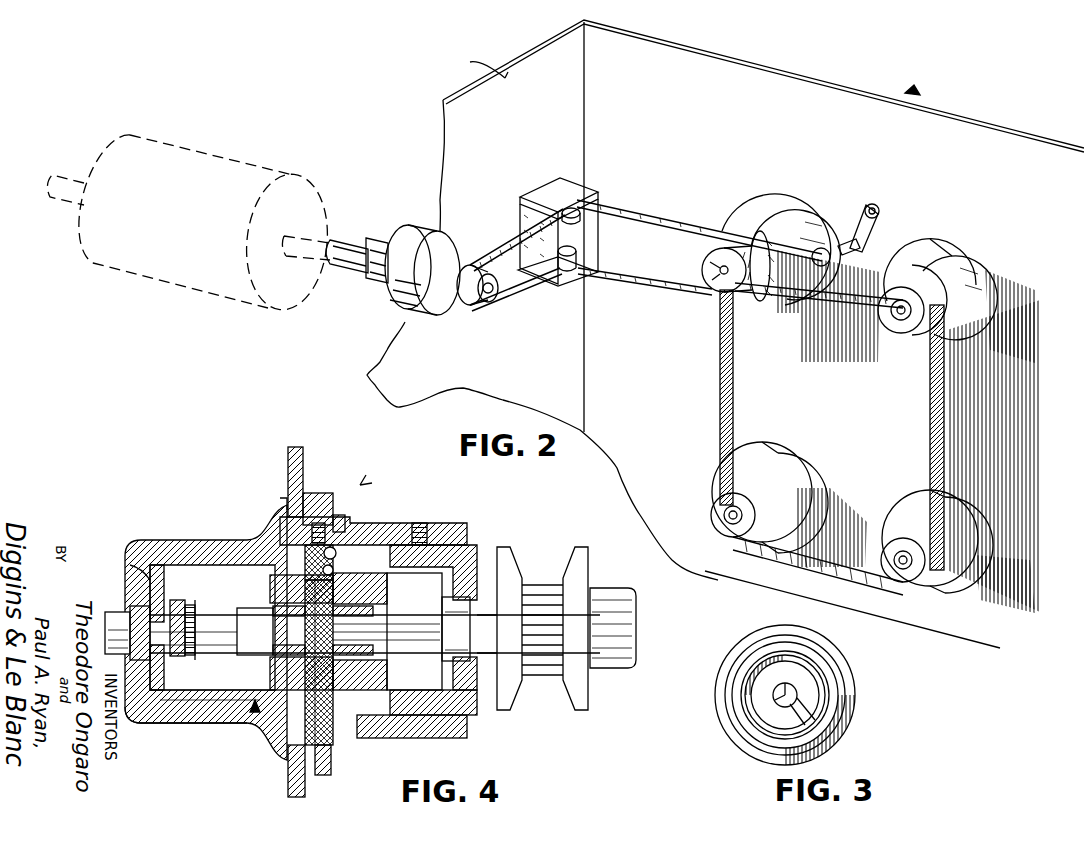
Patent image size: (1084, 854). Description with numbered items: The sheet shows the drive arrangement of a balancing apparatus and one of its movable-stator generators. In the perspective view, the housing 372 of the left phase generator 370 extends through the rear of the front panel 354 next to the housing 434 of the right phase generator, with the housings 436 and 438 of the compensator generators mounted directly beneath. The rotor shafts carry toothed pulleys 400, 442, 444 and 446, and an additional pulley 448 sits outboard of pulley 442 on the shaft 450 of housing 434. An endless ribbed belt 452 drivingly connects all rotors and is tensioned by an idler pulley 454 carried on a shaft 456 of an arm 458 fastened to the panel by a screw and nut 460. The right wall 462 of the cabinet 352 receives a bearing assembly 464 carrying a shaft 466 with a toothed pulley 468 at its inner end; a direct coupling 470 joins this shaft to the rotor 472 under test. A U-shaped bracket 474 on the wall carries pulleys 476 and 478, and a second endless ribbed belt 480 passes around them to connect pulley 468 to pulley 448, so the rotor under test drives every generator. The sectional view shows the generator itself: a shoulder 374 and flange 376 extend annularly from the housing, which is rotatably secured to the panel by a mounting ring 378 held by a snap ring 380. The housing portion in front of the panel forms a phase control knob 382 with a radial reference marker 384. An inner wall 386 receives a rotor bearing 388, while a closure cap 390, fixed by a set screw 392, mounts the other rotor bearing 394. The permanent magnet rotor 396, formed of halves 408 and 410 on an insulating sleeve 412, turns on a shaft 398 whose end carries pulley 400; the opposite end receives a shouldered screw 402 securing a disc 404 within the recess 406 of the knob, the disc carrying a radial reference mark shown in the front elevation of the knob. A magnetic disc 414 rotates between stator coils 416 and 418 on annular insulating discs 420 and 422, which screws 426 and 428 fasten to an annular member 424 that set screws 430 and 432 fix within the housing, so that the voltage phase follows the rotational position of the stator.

In FIG. 2, the housing or cabinet 352 is at (912, 88).
In FIG. 2, the front panel 354 is at (688, 107).
In FIG. 4, the front panel 354 is at (290, 455).
In FIG. 4, the left phase generator 370 is at (360, 485).
In FIG. 2, the housing 372 is at (960, 252).
In FIG. 4, the housing 372 is at (410, 520).
In FIG. 4, the shoulder 374 is at (308, 493).
In FIG. 3, the flange 376 is at (852, 710).
In FIG. 4, the flange 376 is at (282, 500).
In FIG. 4, the mounting ring 378 is at (345, 506).
In FIG. 4, the snap ring 380 is at (328, 520).
In FIG. 3, the phase control knob 382 is at (822, 667).
In FIG. 4, the phase control knob 382 is at (186, 538).
In FIG. 3, the reference marker 384 is at (785, 650).
In FIG. 4, the inner wall 386 is at (182, 700).
In FIG. 4, the rotor bearing 388 is at (160, 572).
In FIG. 4, the closure cap 390 is at (486, 545).
In FIG. 4, the set screw 392 is at (422, 530).
In FIG. 4, the rotor bearing 394 is at (478, 660).
In FIG. 4, the permanent magnet rotor 396 is at (255, 706).
In FIG. 4, the shaft 398 is at (178, 585).
In FIG. 2, the toothed pulley 400 is at (906, 333).
In FIG. 4, the toothed pulley 400 is at (566, 560).
In FIG. 3, the shouldered screw 402 is at (803, 708).
In FIG. 4, the shouldered screw 402 is at (112, 612).
In FIG. 3, the disc 404 is at (765, 720).
In FIG. 4, the disc 404 is at (150, 715).
In FIG. 4, the recess 406 is at (140, 563).
In FIG. 3, the radial reference mark 408 is at (765, 668).
In FIG. 4, the radial reference mark 408 is at (222, 700).
In FIG. 4, the rotor half 410 is at (422, 695).
In FIG. 4, the insulating sleeve 412 is at (372, 660).
In FIG. 4, the magnetic disc 414 is at (322, 590).
In FIG. 4, the stator coil 416 is at (310, 610).
In FIG. 4, the stator coil 418 is at (368, 592).
In FIG. 4, the annular insulating disc 420 is at (316, 570).
In FIG. 4, the annular insulating disc 422 is at (333, 570).
In FIG. 4, the annular member 424 is at (318, 547).
In FIG. 4, the screw 426 is at (336, 555).
In FIG. 4, the screw 428 is at (335, 720).
In FIG. 4, the set screw 430 is at (336, 514).
In FIG. 4, the set screw 432 is at (322, 770).
In FIG. 2, the housing 434 is at (768, 198).
In FIG. 2, the housing 436 is at (775, 445).
In FIG. 2, the housing 438 is at (955, 490).
In FIG. 2, the toothed pulley 442 is at (773, 303).
In FIG. 2, the toothed pulley 444 is at (738, 537).
In FIG. 2, the toothed pulley 446 is at (905, 582).
In FIG. 2, the additional pulley 448 is at (716, 296).
In FIG. 2, the shaft 450 is at (710, 266).
In FIG. 2, the endless ribbed belt 452 is at (718, 392).
In FIG. 2, the idler pulley 454 is at (822, 248).
In FIG. 2, the shaft 456 is at (852, 250).
In FIG. 2, the arm 458 is at (880, 228).
In FIG. 2, the screw and nut 460 is at (874, 206).
In FIG. 2, the right wall 462 is at (505, 78).
In FIG. 2, the bearing assembly 464 is at (440, 245).
In FIG. 2, the shaft 466 is at (384, 250).
In FIG. 2, the pulley 468 is at (470, 310).
In FIG. 2, the direct coupling 470 is at (345, 268).
In FIG. 2, the rotor 472 is at (184, 145).
In FIG. 2, the U-shaped bracket 474 is at (535, 192).
In FIG. 2, the pulley 476 is at (582, 208).
In FIG. 2, the pulley 478 is at (583, 285).
In FIG. 2, the endless ribbed belt 480 is at (645, 202).